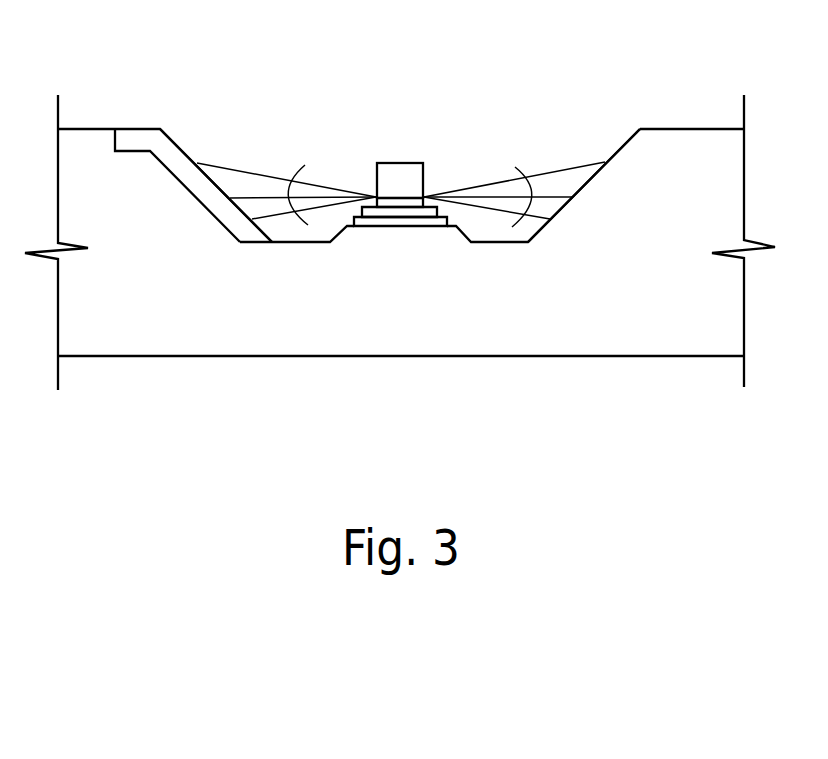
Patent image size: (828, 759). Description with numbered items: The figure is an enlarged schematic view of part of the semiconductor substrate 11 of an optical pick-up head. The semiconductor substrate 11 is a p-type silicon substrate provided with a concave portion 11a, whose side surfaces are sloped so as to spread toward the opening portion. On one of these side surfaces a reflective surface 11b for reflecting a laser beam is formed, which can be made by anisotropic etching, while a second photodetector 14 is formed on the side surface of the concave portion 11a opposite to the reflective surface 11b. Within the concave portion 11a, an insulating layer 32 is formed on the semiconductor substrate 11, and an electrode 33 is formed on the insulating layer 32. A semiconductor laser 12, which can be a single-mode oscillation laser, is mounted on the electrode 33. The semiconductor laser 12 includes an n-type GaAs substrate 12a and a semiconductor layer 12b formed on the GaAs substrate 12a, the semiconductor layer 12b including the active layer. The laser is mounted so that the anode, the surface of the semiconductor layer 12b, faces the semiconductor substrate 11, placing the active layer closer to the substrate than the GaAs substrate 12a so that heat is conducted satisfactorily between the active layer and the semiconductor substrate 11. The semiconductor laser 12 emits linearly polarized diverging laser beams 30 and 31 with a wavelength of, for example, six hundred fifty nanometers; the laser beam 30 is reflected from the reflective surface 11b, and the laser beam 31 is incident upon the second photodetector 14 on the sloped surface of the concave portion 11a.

The semiconductor substrate 11 is at (683, 137).
The concave portion 11a is at (245, 150).
The reflective surface 11b is at (620, 150).
The second photodetector 14 is at (143, 137).
The semiconductor laser 12 is at (427, 122).
The GaAs substrate 12a is at (395, 163).
The semiconductor layer 12b is at (411, 202).
The laser beam 30 is at (521, 166).
The laser beam 31 is at (304, 165).
The insulating layer 32 is at (370, 222).
The electrode 33 is at (418, 212).